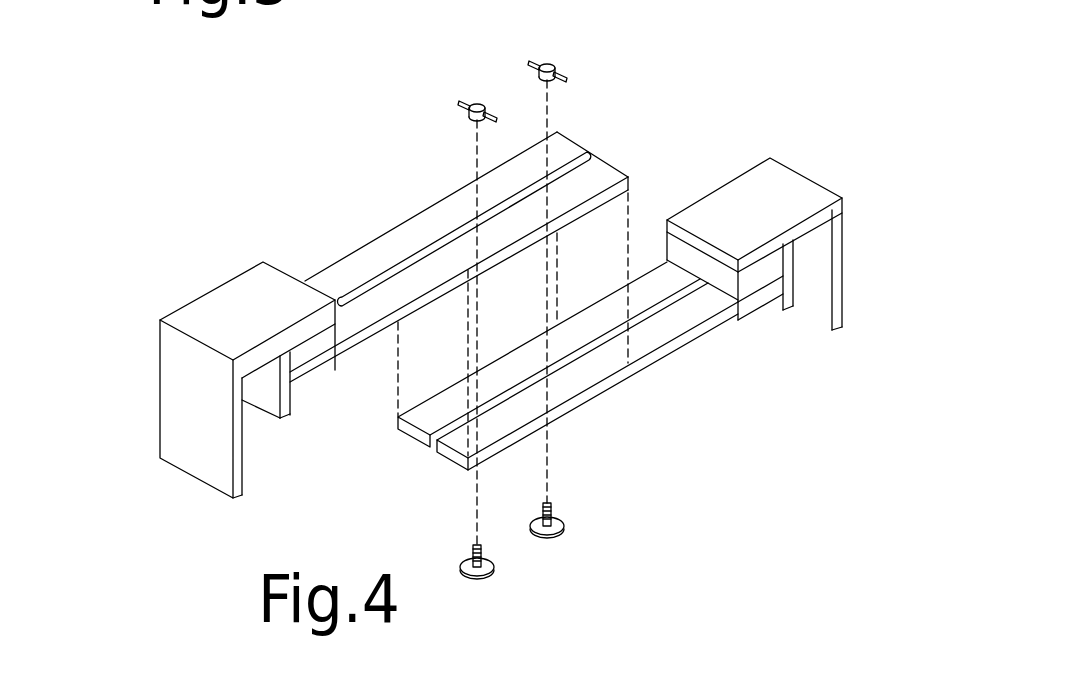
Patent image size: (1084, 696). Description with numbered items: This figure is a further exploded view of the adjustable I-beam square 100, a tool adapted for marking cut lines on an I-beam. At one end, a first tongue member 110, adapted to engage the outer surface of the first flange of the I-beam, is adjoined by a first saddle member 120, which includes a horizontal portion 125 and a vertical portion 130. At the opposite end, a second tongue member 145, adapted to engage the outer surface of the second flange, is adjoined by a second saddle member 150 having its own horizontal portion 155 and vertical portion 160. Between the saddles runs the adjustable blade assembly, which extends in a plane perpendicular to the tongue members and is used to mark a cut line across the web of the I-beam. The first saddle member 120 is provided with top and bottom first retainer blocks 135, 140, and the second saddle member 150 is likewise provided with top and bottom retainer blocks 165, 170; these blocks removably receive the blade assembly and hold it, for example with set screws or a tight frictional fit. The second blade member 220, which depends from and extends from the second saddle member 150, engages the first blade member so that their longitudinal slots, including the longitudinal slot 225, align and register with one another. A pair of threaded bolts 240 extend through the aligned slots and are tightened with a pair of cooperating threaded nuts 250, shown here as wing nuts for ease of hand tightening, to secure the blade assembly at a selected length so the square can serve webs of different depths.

The adjustable I-beam square 100 is at (142, 192).
The first tongue member 110 is at (185, 437).
The first saddle member 120 is at (211, 302).
The horizontal portion 125 is at (263, 296).
The vertical portion 130 is at (272, 397).
The top first retainer block 135 is at (318, 345).
The bottom first retainer block 140 is at (320, 372).
The second tongue member 145 is at (837, 284).
The second saddle member 150 is at (754, 177).
The horizontal portion 155 is at (796, 190).
The vertical portion 160 is at (787, 297).
The top retainer block 165 is at (679, 251).
The bottom retainer block 170 is at (745, 322).
The second blade member 220 is at (685, 338).
The longitudinal slot 225 is at (433, 438).
The threaded bolts 240 is at (557, 528).
The threaded nuts 250 is at (545, 68).